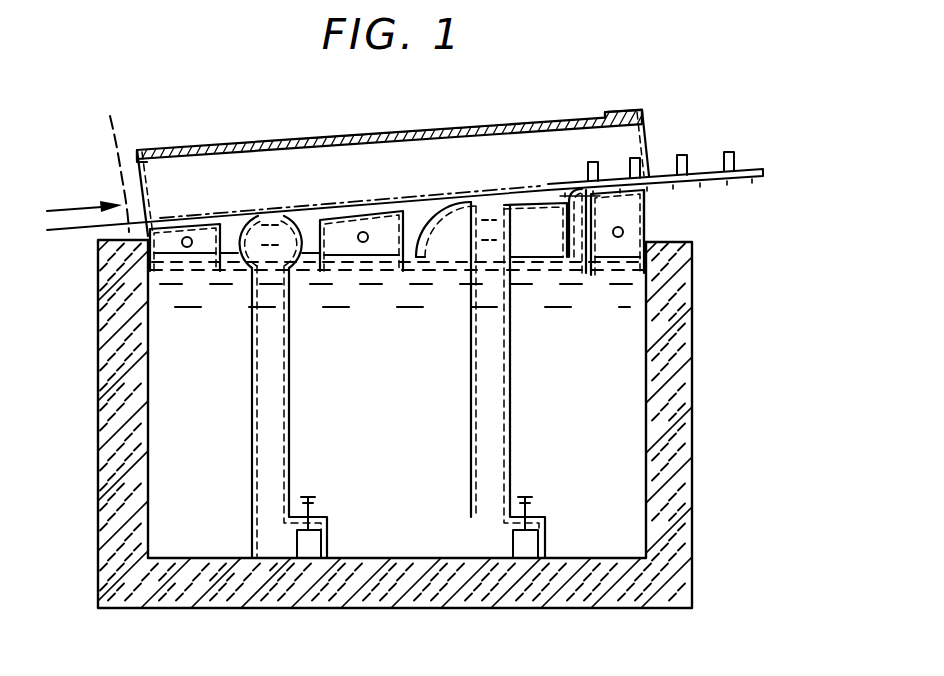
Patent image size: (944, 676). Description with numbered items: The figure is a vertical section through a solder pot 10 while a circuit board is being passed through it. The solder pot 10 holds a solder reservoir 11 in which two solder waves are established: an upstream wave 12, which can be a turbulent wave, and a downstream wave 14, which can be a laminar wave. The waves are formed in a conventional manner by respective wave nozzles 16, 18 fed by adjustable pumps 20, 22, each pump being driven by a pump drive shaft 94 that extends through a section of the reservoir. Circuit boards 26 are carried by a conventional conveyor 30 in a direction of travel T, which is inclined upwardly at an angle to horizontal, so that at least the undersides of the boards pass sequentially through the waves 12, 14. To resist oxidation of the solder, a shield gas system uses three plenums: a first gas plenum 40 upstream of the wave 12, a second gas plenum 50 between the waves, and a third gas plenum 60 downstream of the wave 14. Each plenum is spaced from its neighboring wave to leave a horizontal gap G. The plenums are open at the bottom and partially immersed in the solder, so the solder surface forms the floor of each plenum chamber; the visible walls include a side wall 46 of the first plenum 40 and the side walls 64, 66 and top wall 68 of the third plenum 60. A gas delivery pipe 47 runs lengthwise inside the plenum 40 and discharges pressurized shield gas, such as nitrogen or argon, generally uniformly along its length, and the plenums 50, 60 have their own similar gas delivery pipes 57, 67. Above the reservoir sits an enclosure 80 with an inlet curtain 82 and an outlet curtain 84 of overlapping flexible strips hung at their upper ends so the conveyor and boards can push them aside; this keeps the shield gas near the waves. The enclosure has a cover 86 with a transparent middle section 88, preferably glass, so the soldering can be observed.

The solder pot 10 is at (704, 489).
The solder reservoir 11 is at (635, 423).
The first solder wave 12 is at (287, 214).
The second solder wave 14 is at (446, 203).
The wave nozzle 16 is at (255, 343).
The wave nozzle 18 is at (508, 364).
The adjustable pump 20 is at (318, 542).
The adjustable pump 22 is at (534, 542).
The circuit boards 26 is at (746, 165).
The conveyor 30 is at (119, 159).
The first gas plenum 40 is at (203, 222).
The side wall 46 is at (221, 270).
The gas delivery pipe 47 is at (182, 244).
The second gas plenum 50 is at (398, 206).
The gas delivery pipe 57 is at (363, 231).
The third gas plenum 60 is at (583, 191).
The side wall 64 is at (593, 226).
The side wall 66 is at (650, 240).
The gas delivery pipe 67 is at (622, 236).
The top wall 68 is at (606, 190).
The enclosure 80 is at (390, 124).
The inlet curtain 82 is at (143, 228).
The outlet curtain 84 is at (648, 128).
The cover 86 is at (628, 98).
The transparent middle section 88 is at (518, 122).
The pump drive shaft 94 is at (530, 500).
The direction of travel T is at (66, 204).
The horizontal gap G is at (233, 222).